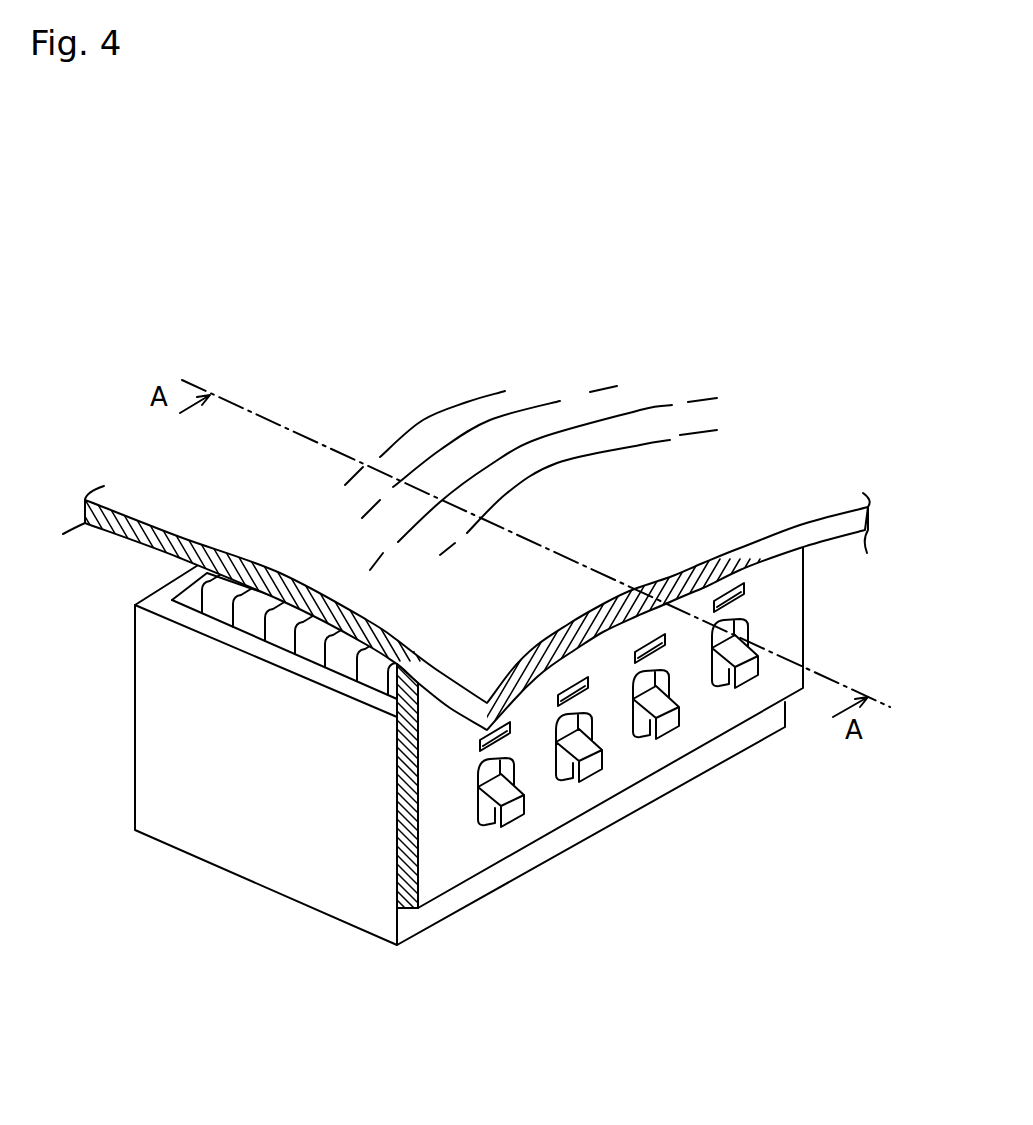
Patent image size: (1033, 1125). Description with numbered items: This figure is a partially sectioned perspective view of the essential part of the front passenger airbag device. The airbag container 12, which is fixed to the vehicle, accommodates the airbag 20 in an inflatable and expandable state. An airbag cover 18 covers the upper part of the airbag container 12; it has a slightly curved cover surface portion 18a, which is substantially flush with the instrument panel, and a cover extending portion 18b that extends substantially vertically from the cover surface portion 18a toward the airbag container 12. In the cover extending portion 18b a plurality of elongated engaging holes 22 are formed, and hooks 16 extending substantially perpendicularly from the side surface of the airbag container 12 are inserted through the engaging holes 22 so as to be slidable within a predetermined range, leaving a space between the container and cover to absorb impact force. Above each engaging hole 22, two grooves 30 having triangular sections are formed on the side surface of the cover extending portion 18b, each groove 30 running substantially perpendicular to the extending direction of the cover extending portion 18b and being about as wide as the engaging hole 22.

The airbag container 12 is at (292, 851).
The hook 16 is at (670, 727).
The airbag cover 18 is at (753, 457).
The cover surface portion 18a is at (570, 418).
The cover extending portion 18b is at (790, 615).
The airbag 20 is at (265, 605).
The engaging hole 22 is at (482, 817).
The groove 30 is at (637, 614).